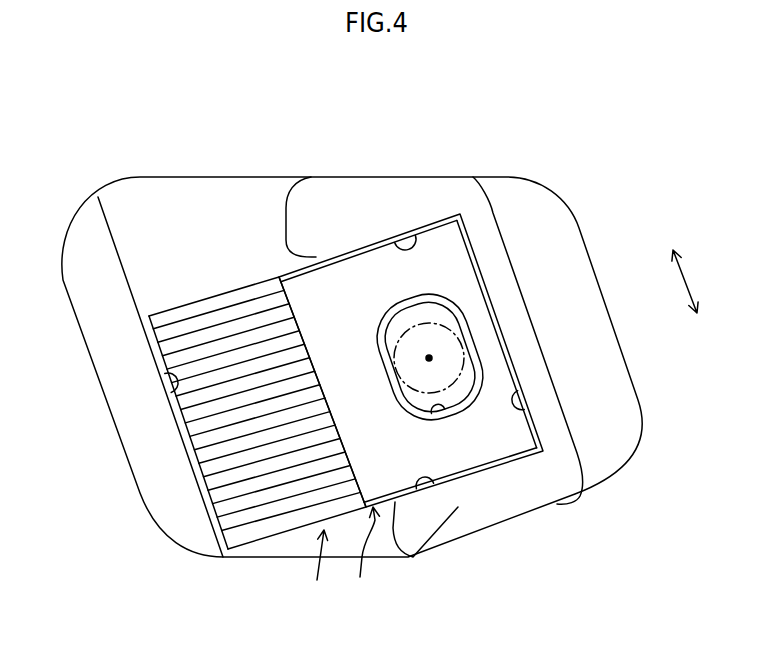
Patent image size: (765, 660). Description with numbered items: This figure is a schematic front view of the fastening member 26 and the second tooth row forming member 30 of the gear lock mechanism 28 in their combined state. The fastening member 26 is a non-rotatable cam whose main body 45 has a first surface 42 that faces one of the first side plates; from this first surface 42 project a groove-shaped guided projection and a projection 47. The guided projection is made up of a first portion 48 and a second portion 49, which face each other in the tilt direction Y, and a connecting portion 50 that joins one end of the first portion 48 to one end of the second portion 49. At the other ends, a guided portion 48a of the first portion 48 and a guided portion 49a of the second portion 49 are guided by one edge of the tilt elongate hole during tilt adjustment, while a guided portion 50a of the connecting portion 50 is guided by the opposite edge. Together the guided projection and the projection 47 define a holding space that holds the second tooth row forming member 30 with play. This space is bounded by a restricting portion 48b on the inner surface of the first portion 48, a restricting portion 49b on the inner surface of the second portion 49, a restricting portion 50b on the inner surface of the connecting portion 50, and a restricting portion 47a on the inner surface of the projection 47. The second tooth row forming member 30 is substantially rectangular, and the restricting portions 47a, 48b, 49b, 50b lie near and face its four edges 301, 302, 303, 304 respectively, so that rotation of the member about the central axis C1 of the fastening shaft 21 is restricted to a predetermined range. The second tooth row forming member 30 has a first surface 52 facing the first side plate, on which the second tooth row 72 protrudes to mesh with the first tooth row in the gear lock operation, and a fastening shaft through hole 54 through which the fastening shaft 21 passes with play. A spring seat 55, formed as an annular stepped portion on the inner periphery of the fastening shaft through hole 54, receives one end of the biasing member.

The fastening member 26 is at (533, 166).
The main body 45 is at (596, 241).
The first surface 42 is at (172, 225).
The projection 47 is at (112, 332).
The restricting portion 47a is at (160, 400).
The edge 301 is at (200, 460).
The second tooth row 72 is at (277, 507).
The first portion 48 is at (373, 207).
The guided portion 48a is at (276, 244).
The restricting portion 48b is at (421, 226).
The edge 302 is at (338, 255).
The edge 304 is at (487, 280).
The edge 303 is at (487, 473).
The connecting portion 50 is at (540, 363).
The guided portion 50a is at (532, 313).
The restricting portion 50b is at (524, 412).
The first surface 52 is at (490, 438).
The spring seat 55 is at (377, 323).
The fastening shaft 21 is at (418, 327).
The central axis C1 is at (429, 357).
The fastening shaft through hole 54 is at (438, 410).
The second portion 49 is at (467, 518).
The guided portion 49a is at (389, 545).
The restricting portion 49b is at (422, 484).
The gear lock mechanism 28 is at (317, 578).
The second tooth row forming member 30 is at (361, 555).
The tilt direction Y is at (687, 280).